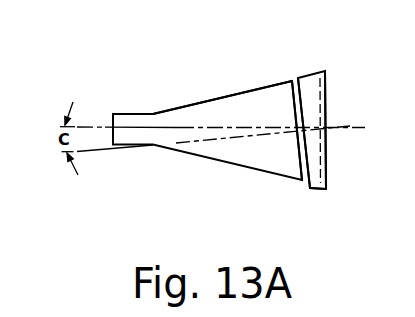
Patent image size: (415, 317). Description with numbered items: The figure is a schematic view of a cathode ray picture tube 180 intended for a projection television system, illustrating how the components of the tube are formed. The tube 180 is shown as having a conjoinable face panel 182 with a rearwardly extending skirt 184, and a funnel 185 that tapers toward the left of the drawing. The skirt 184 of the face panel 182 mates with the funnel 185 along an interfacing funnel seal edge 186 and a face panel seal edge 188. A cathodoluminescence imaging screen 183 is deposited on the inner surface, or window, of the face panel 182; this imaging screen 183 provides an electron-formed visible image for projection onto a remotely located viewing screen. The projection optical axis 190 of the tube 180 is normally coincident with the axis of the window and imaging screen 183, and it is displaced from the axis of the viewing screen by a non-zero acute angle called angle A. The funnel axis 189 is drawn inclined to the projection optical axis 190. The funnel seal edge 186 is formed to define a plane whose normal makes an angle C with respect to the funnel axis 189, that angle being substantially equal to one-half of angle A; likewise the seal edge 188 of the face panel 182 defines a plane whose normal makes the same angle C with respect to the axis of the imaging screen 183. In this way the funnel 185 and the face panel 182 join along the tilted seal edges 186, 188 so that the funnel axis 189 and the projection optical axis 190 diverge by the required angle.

The cathode ray picture tube 180 is at (197, 163).
The face panel 182 is at (327, 112).
The cathodoluminescence imaging screen 183 is at (322, 157).
The skirt 184 is at (320, 74).
The funnel 185 is at (202, 100).
The funnel seal edge 186 is at (293, 100).
The face panel seal edge 188 is at (304, 78).
The funnel axis 189 is at (248, 140).
The projection optical axis 190 is at (360, 128).